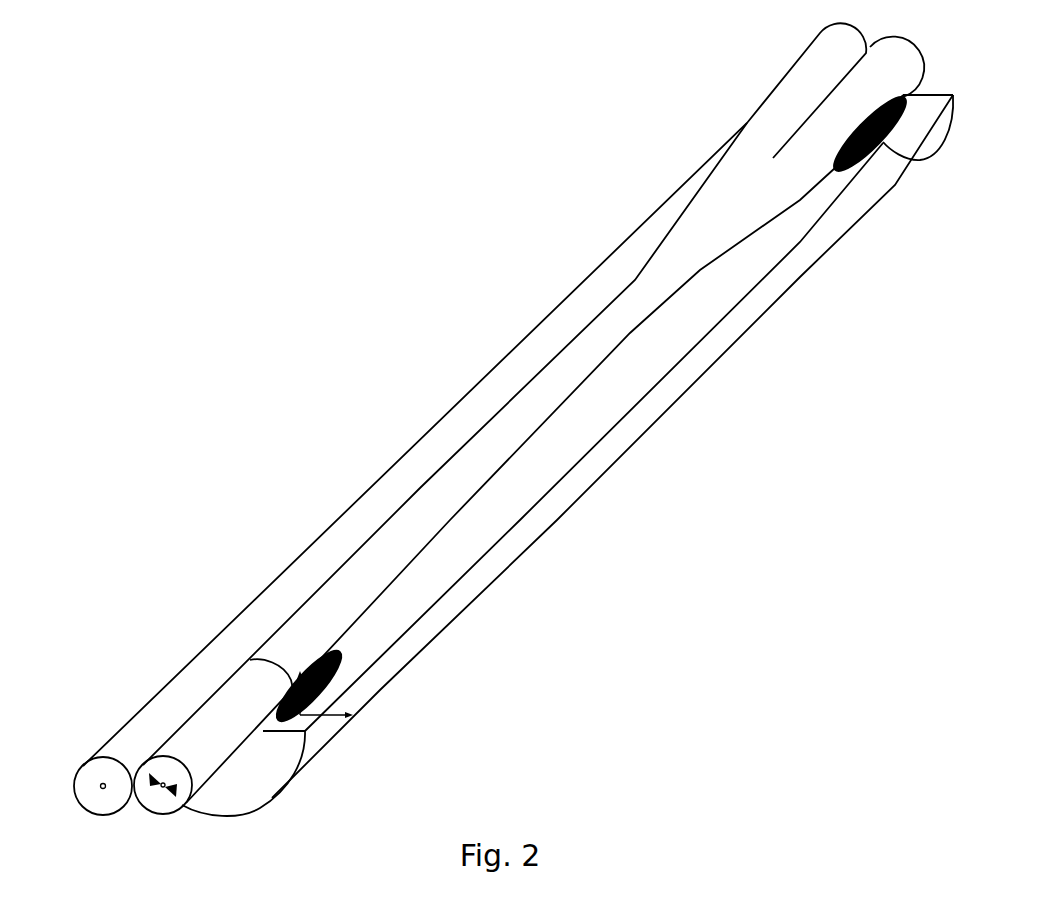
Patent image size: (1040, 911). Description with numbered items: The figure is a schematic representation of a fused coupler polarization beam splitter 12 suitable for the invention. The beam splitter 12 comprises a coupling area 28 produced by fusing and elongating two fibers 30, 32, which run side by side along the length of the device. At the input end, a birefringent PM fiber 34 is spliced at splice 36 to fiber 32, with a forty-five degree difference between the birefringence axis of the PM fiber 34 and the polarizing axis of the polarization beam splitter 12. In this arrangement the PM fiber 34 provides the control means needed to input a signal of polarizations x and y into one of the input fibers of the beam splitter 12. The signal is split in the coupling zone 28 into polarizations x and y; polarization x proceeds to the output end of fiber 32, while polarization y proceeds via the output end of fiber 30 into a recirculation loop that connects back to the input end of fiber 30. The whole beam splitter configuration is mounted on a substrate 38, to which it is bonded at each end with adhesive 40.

The polarization beam splitter 12 is at (548, 448).
The coupling area 28 is at (552, 392).
The fiber 30 is at (800, 73).
The fiber 32 is at (313, 645).
The birefringent PM fiber 34 is at (226, 738).
The splice 36 is at (279, 660).
The substrate 38 is at (545, 472).
The adhesive 40 is at (337, 690).